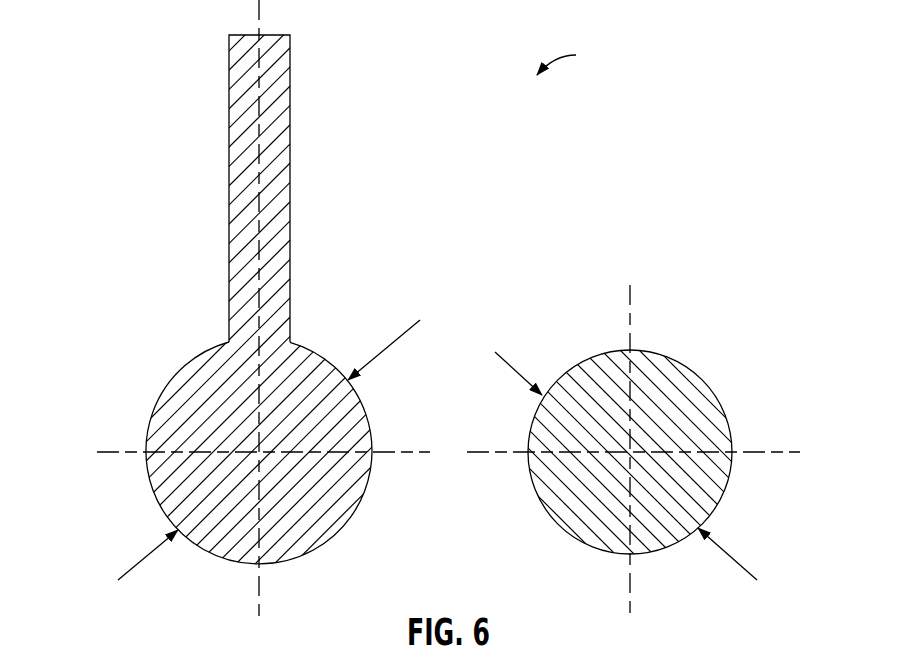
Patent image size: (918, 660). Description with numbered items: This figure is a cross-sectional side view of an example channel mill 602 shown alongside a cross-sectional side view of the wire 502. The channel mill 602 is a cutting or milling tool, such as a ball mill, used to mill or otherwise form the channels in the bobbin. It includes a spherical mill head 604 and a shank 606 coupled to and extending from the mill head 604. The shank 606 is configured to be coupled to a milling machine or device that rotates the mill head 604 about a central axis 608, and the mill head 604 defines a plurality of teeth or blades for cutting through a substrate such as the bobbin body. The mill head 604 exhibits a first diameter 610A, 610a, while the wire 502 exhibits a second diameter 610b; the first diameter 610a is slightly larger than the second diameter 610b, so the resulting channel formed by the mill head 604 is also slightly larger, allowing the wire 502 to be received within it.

The channel mill 602 is at (130, 203).
The mill head 604 is at (340, 528).
The shank 606 is at (292, 176).
The central axis 608 is at (258, 100).
The first diameter 610A is at (380, 354).
The first diameter 610a is at (587, 57).
The second diameter 610b is at (495, 352).
The wire 502 is at (692, 370).